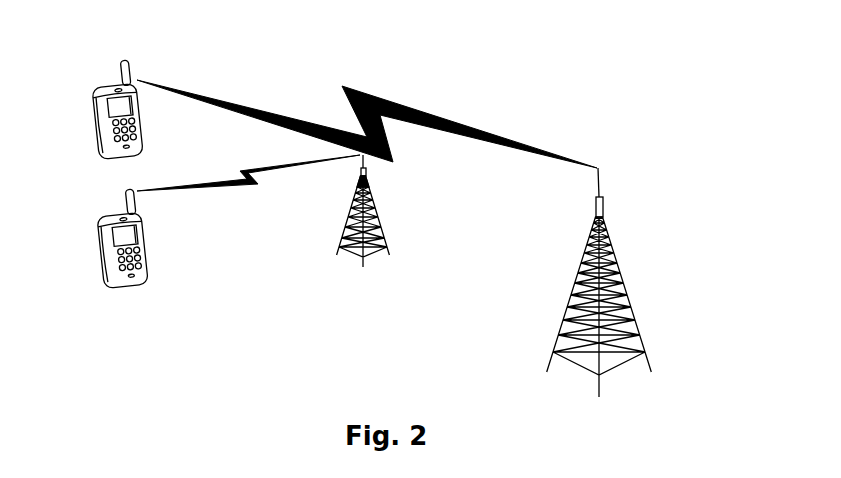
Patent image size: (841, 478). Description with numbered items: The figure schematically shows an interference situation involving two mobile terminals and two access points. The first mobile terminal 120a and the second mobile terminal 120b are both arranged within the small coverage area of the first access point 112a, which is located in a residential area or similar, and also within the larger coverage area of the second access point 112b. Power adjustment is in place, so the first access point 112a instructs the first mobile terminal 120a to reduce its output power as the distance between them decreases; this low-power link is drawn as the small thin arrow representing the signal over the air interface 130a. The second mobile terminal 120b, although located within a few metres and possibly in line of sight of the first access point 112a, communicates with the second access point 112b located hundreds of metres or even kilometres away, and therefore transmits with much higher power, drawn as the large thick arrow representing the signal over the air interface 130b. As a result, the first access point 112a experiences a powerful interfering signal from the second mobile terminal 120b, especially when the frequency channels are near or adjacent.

The first mobile terminal 120a is at (102, 253).
The second mobile terminal 120b is at (98, 122).
The signal over the air interface 130a is at (218, 189).
The signal over the air interface 130b is at (253, 114).
The first access point 112a is at (383, 233).
The second access point 112b is at (627, 343).